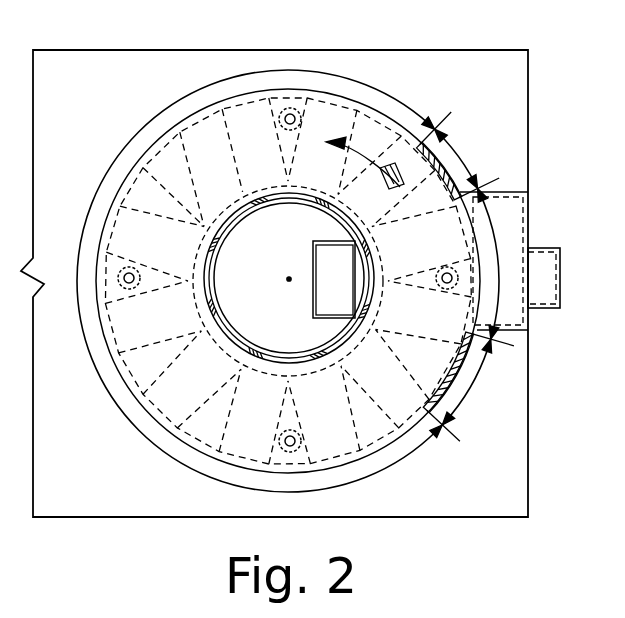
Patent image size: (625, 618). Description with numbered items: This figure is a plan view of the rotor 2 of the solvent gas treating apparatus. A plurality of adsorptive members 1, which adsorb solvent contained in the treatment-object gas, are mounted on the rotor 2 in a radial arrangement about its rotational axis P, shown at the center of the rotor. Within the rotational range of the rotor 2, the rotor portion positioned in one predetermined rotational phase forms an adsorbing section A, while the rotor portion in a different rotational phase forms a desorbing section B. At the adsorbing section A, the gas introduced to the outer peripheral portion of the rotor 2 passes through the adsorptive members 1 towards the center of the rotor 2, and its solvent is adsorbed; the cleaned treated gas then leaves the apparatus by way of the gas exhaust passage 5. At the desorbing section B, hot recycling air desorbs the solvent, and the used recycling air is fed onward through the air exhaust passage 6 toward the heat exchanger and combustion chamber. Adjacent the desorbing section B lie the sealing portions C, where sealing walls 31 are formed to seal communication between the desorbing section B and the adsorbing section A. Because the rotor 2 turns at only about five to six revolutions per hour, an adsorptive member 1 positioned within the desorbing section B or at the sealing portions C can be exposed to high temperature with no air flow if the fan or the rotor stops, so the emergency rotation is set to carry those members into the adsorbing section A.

The adsorptive member 1 is at (137, 228).
The rotor 2 is at (120, 180).
The gas exhaust passage 5 is at (277, 238).
The air exhaust passage 6 is at (562, 277).
The sealing wall 31 is at (447, 176).
The adsorbing section A is at (385, 469).
The desorbing section B is at (497, 243).
The sealing portion C is at (456, 151).
The rotational axis P is at (286, 283).